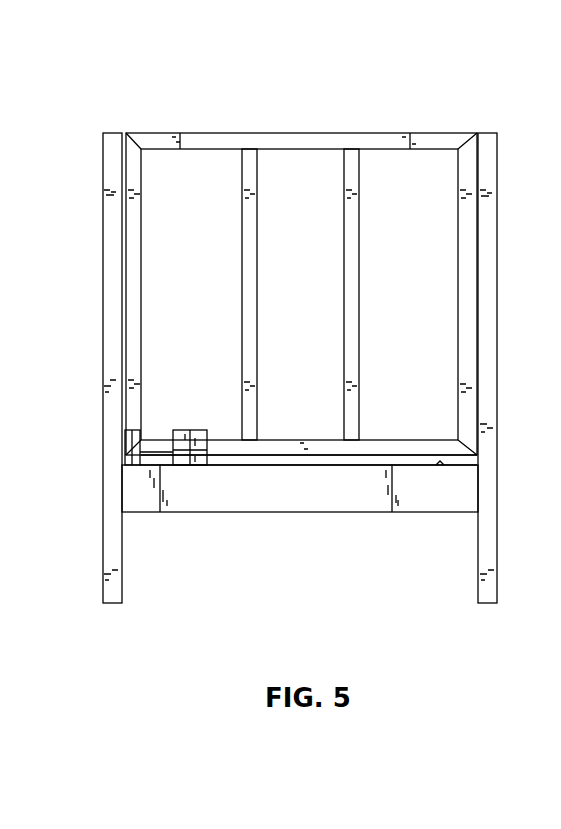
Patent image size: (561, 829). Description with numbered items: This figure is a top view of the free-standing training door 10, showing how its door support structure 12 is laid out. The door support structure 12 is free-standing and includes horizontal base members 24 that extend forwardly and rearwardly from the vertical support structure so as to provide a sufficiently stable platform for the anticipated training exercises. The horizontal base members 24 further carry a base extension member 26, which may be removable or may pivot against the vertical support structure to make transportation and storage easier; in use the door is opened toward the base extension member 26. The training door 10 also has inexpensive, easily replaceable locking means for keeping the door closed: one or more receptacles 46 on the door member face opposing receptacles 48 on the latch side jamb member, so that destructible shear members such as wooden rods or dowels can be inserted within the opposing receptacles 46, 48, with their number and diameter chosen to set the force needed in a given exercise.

The training door 10 is at (122, 89).
The door support structure 12 is at (447, 498).
The horizontal base members 24 is at (112, 516).
The base extension member 26 is at (285, 133).
The receptacles 46 is at (195, 465).
The receptacles 48 is at (130, 442).